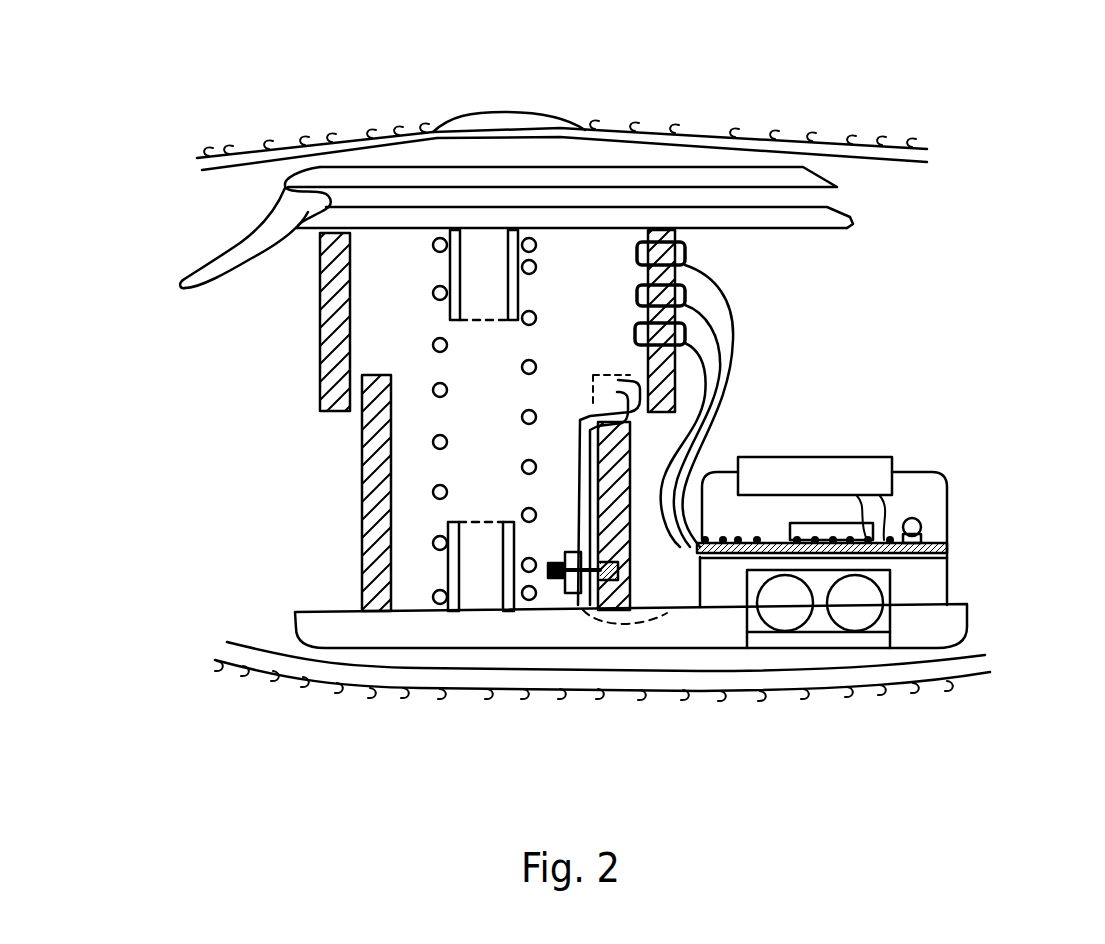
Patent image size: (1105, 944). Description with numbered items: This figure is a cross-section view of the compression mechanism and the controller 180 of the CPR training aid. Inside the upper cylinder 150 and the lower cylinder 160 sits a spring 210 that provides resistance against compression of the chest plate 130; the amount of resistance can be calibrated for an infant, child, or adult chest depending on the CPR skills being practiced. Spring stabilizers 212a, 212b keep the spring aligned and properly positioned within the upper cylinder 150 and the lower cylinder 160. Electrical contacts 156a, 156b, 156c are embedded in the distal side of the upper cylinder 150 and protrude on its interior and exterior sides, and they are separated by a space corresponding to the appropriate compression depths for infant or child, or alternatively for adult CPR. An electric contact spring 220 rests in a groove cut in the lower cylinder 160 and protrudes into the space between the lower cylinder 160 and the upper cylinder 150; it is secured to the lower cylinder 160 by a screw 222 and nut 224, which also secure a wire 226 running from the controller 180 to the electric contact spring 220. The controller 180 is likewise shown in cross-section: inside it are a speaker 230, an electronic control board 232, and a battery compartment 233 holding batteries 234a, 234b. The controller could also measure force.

The chest plate 130 is at (780, 210).
The upper cylinder 150 is at (320, 337).
The electrical contact 156a is at (687, 250).
The electrical contact 156b is at (687, 290).
The electrical contact 156c is at (687, 332).
The lower cylinder 160 is at (362, 512).
The controller 180 is at (933, 497).
The spring 210 is at (437, 288).
The spring stabilizer 212a is at (475, 273).
The spring stabilizer 212b is at (478, 567).
The electric contact spring 220 is at (632, 417).
The screw 222 is at (553, 573).
The nut 224 is at (580, 575).
The wire 226 is at (690, 556).
The speaker 230 is at (838, 480).
The electronic control board 232 is at (913, 557).
The battery compartment 233 is at (860, 597).
The battery 234a is at (887, 620).
The battery 234b is at (780, 600).